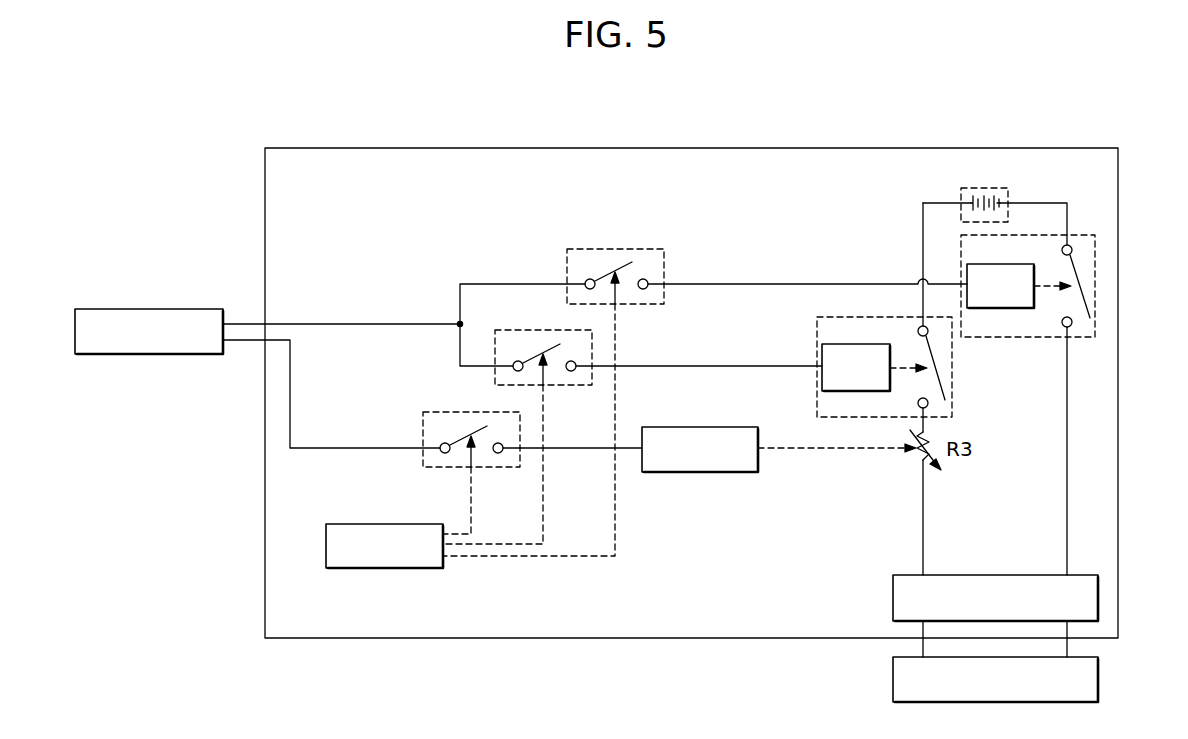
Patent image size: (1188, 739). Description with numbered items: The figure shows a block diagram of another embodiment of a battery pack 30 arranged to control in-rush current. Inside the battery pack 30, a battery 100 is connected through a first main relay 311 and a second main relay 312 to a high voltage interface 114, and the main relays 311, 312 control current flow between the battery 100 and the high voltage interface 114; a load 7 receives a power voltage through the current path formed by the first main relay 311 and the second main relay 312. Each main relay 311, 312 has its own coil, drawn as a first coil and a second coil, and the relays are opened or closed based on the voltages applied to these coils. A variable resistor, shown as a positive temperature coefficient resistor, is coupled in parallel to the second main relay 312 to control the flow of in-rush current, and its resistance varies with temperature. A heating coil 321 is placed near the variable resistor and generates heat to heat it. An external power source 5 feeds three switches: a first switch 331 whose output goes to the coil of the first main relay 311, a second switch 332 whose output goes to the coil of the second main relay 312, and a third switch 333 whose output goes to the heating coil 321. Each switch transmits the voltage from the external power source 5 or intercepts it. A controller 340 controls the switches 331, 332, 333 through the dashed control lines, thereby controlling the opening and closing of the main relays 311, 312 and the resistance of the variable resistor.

The external power source 5 is at (146, 309).
The battery pack 30 is at (690, 148).
The first switch 331 is at (613, 249).
The second switch 332 is at (575, 386).
The third switch 333 is at (503, 468).
The heating coil 321 is at (703, 473).
The second main relay 312 is at (817, 324).
The first main relay 311 is at (1030, 338).
The battery 100 is at (1010, 191).
The controller 340 is at (387, 569).
The high voltage interface 114 is at (1100, 598).
The load 7 is at (1100, 680).